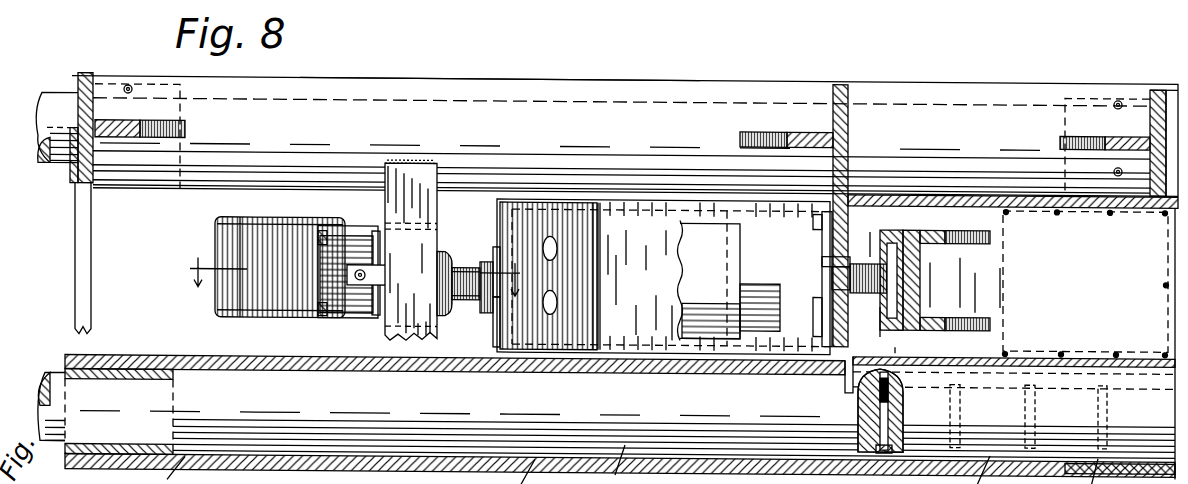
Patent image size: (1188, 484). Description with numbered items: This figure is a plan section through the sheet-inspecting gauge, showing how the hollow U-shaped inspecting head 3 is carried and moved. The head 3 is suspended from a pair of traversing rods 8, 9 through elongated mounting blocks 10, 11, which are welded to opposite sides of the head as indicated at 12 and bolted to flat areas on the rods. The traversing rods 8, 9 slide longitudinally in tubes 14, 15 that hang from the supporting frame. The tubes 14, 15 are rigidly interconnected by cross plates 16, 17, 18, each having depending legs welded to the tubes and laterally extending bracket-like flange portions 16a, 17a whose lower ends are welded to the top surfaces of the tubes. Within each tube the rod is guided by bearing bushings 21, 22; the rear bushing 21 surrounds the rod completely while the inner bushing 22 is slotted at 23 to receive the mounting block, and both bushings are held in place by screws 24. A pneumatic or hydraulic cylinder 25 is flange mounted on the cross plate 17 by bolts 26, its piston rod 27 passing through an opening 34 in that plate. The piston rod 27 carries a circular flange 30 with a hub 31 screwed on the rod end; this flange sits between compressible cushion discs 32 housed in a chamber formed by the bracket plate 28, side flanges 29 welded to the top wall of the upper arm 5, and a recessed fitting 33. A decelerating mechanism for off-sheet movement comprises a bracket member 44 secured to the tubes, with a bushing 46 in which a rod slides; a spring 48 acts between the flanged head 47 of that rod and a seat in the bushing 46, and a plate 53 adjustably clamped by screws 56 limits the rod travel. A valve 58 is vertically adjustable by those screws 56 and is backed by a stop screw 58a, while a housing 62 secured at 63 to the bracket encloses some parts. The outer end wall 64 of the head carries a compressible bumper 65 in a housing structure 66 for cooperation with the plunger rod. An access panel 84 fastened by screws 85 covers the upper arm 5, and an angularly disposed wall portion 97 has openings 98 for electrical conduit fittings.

The inspecting head 3 is at (672, 350).
The upper arm 5 is at (657, 280).
The traversing rod 8 is at (55, 378).
The traversing rod 9 is at (58, 96).
The mounting block 10 is at (1085, 352).
The mounting block 11 is at (1030, 200).
The weld 12 is at (1120, 200).
The tube 14 is at (381, 274).
The tube 15 is at (520, 74).
The cross plate 16 is at (92, 236).
The flange portion 16a is at (120, 124).
The cross plate 17 is at (848, 222).
The flange portion 17a is at (805, 141).
The cross plate 18 is at (1162, 84).
The bearing bushing 21 is at (115, 84).
The bearing bushing 22 is at (1103, 88).
The slot 23 is at (845, 372).
The screw 24 is at (130, 85).
The cylinder 25 is at (695, 245).
The bolt 26 is at (813, 215).
The piston rod 27 is at (840, 270).
The bracket plate 28 is at (920, 300).
The side flange 29 is at (992, 236).
The circular flange 30 is at (903, 280).
The hub 31 is at (875, 290).
The cushion disc 32 is at (905, 225).
The recessed fitting 33 is at (848, 336).
The opening 34 is at (822, 254).
The bracket member 44 is at (437, 206).
The bushing 46 is at (438, 250).
The flanged head 47 is at (470, 297).
The spring 48 is at (457, 262).
The plate 53 is at (368, 288).
The clamping screw 56 is at (372, 228).
The valve 58 is at (340, 290).
The stop screw 58a is at (347, 268).
The housing 62 is at (275, 215).
The securing point 63 is at (420, 218).
The outer end wall 64 is at (497, 344).
The bumper 65 is at (483, 258).
The housing structure 66 is at (495, 243).
The access panel 84 is at (1085, 281).
The screw 85 is at (1165, 278).
The angularly disposed wall portion 97 is at (580, 304).
The opening 98 is at (558, 293).